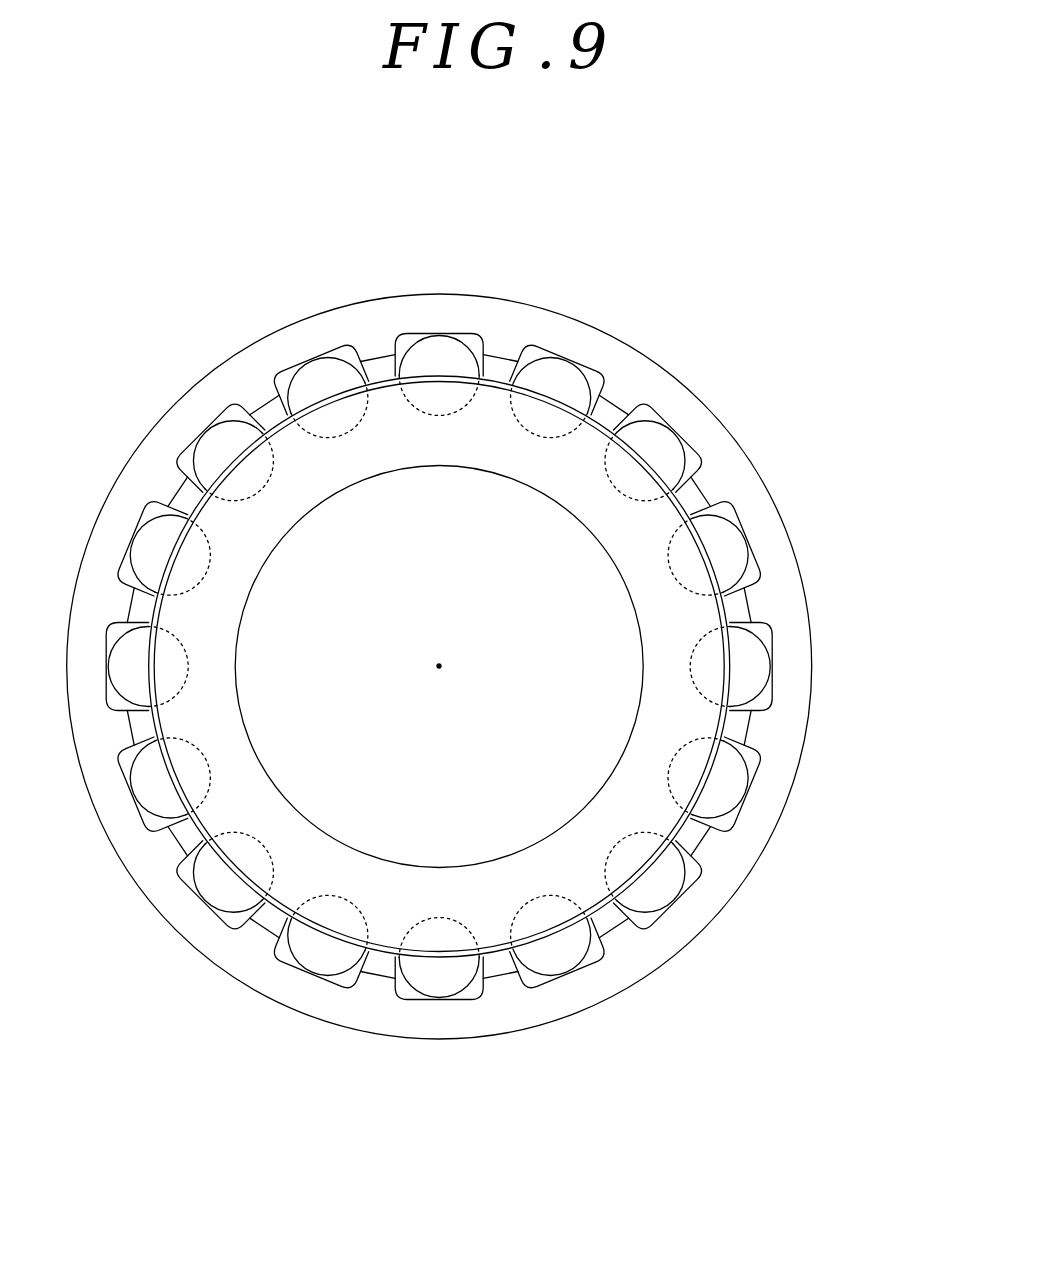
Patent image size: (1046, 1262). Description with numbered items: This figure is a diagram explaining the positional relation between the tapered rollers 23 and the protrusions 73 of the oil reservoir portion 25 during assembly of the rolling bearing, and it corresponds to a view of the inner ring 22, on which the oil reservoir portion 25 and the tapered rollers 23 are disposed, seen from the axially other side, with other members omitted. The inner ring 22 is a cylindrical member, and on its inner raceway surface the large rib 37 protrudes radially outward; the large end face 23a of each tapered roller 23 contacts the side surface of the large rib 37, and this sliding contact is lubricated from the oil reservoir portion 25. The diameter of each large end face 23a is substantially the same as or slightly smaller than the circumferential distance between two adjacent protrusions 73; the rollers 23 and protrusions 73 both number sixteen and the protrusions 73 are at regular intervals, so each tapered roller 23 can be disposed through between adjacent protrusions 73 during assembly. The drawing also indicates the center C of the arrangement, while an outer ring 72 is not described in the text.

The oil reservoir portion 25 is at (811, 601).
The outer ring 72 is at (733, 870).
The inner ring 22 is at (380, 455).
The large rib 37 is at (388, 415).
The protrusions 73 is at (498, 372).
The tapered rollers 23 is at (523, 365).
The large end face 23a is at (560, 387).
The center axis C is at (440, 666).